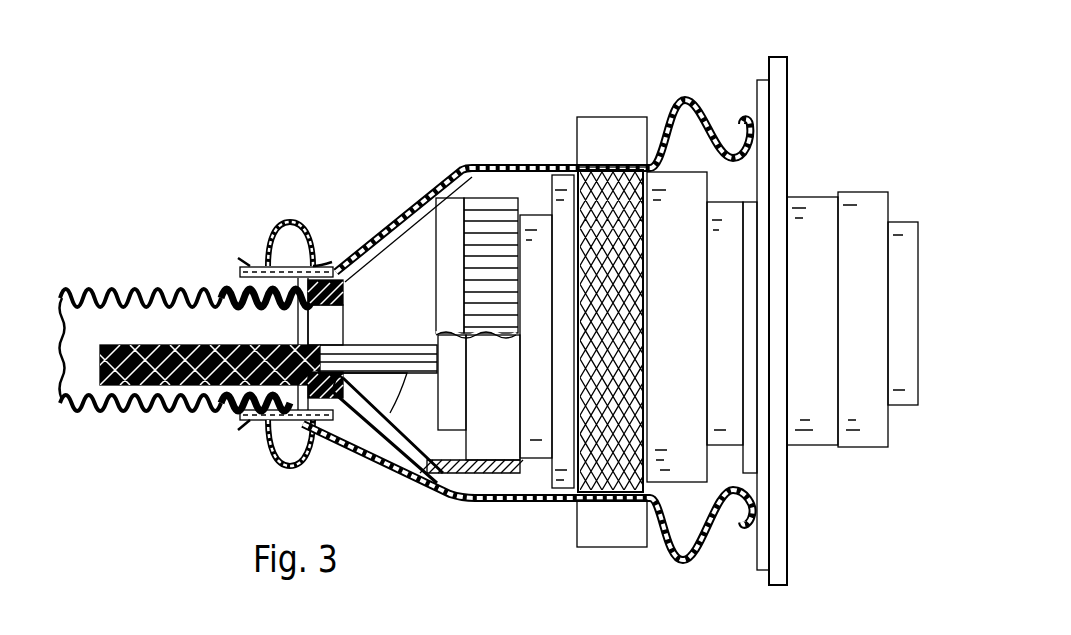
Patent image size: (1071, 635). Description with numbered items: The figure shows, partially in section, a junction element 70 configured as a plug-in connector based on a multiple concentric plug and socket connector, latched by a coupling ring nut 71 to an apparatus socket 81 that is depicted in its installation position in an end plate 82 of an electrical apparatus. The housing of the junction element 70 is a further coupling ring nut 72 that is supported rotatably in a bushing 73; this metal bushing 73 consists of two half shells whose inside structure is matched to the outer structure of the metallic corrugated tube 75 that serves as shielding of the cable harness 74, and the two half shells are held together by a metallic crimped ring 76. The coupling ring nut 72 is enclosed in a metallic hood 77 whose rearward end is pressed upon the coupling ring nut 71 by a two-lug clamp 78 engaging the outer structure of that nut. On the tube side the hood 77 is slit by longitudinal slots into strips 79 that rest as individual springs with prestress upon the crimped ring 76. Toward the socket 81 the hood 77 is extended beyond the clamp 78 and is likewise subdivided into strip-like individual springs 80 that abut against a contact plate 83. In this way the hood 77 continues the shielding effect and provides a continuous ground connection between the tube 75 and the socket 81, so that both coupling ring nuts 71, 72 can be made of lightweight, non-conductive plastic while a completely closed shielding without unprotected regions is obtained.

The junction element 70 is at (433, 180).
The coupling ring nut 71 is at (648, 198).
The coupling ring nut 72 is at (447, 495).
The bushing 73 is at (215, 280).
The cable harness 74 is at (377, 447).
The corrugated tube 75 is at (196, 410).
The crimped ring 76 is at (283, 466).
The hood 77 is at (525, 505).
The two-lug clamp 78 is at (605, 535).
The strips 79 is at (284, 220).
The individual springs 80 is at (685, 97).
The apparatus socket 81 is at (808, 205).
The end plate 82 is at (778, 90).
The contact plate 83 is at (760, 540).